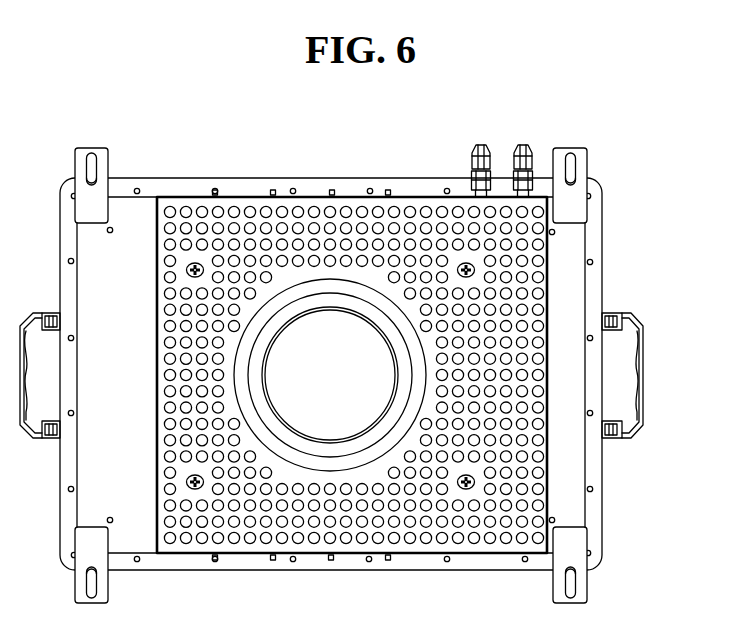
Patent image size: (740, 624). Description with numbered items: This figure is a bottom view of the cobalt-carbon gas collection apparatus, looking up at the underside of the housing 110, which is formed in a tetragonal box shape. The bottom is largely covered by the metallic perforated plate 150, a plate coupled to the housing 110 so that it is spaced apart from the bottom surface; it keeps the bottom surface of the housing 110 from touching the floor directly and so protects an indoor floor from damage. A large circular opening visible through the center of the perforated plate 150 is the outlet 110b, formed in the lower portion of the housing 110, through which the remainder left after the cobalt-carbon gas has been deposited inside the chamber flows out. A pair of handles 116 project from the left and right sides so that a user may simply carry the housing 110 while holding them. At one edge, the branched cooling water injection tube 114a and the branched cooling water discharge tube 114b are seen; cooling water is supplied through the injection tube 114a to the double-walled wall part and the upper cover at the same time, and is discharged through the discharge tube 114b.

The housing 110 is at (581, 287).
The outlet 110b is at (326, 337).
The metallic perforated plate 150 is at (240, 196).
The cooling water injection tube 114a is at (522, 143).
The cooling water discharge tube 114b is at (480, 143).
The handles 116 is at (645, 349).